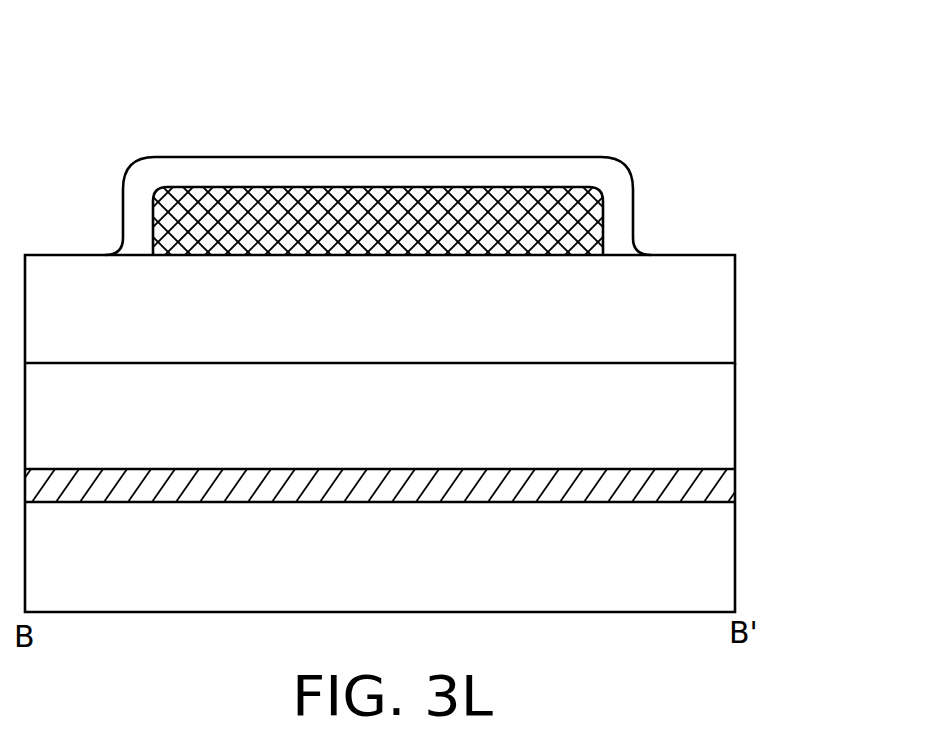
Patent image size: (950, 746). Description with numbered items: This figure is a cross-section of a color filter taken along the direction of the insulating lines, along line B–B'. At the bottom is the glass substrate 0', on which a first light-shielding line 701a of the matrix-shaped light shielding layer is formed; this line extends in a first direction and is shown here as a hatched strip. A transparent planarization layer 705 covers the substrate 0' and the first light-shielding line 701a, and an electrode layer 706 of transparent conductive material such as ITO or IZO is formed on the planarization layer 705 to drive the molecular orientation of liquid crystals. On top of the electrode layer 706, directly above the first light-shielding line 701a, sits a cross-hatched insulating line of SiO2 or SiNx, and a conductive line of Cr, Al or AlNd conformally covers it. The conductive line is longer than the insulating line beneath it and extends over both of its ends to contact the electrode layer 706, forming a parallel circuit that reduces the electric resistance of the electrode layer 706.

The glass substrate 0' is at (442, 557).
The first light-shielding lines 701a is at (683, 484).
The transparent planarization layer 705 is at (692, 406).
The electrode layer 706 is at (678, 282).